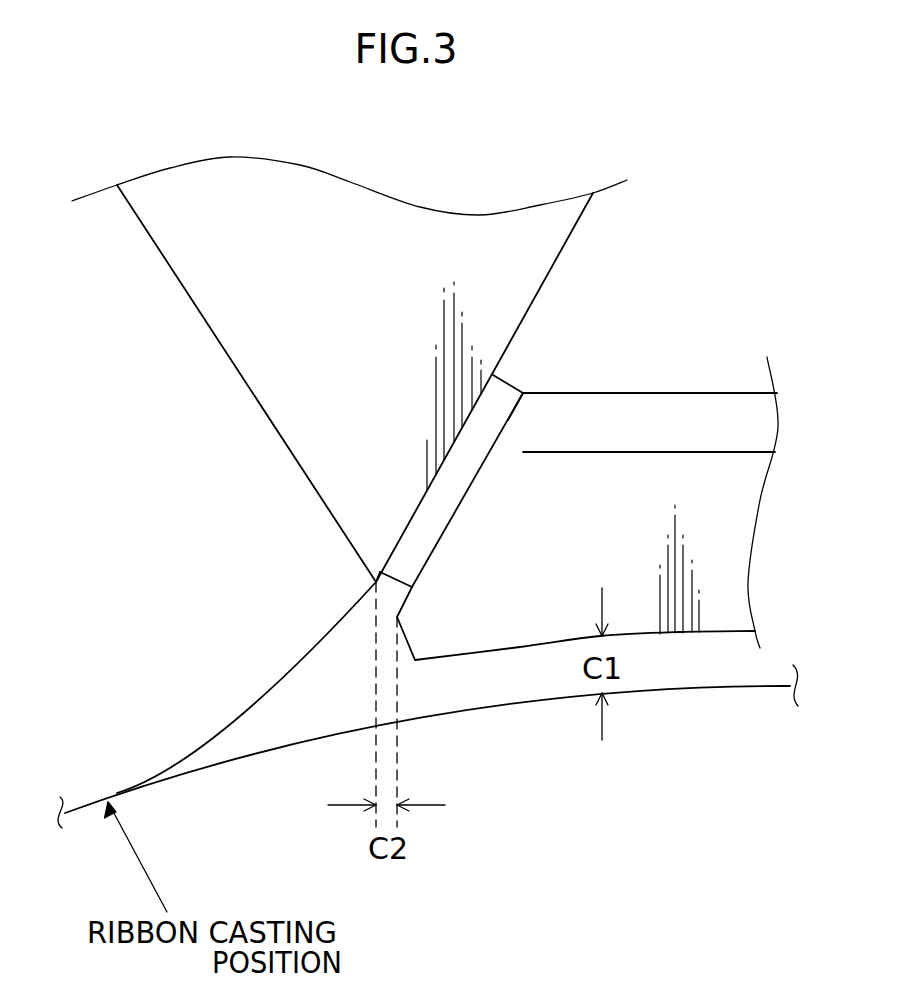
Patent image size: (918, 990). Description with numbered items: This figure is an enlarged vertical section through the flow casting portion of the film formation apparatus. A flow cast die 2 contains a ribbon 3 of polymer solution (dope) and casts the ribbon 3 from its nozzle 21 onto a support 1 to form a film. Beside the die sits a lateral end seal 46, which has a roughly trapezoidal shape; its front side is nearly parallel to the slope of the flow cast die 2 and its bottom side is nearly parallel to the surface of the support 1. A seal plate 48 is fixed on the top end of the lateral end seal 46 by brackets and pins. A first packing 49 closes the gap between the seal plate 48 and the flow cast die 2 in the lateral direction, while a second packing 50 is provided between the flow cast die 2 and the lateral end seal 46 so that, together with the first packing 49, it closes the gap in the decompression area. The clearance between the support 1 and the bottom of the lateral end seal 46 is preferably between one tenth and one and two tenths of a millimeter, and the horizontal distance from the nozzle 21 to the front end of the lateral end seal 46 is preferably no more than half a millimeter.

The support 1 is at (680, 688).
The flow cast die 2 is at (245, 381).
The ribbon 3 is at (257, 707).
The nozzle 21 is at (376, 582).
The lateral end seal 46 is at (502, 620).
The seal plate 48 is at (708, 423).
The first packing 49 is at (502, 395).
The second packing 50 is at (430, 522).